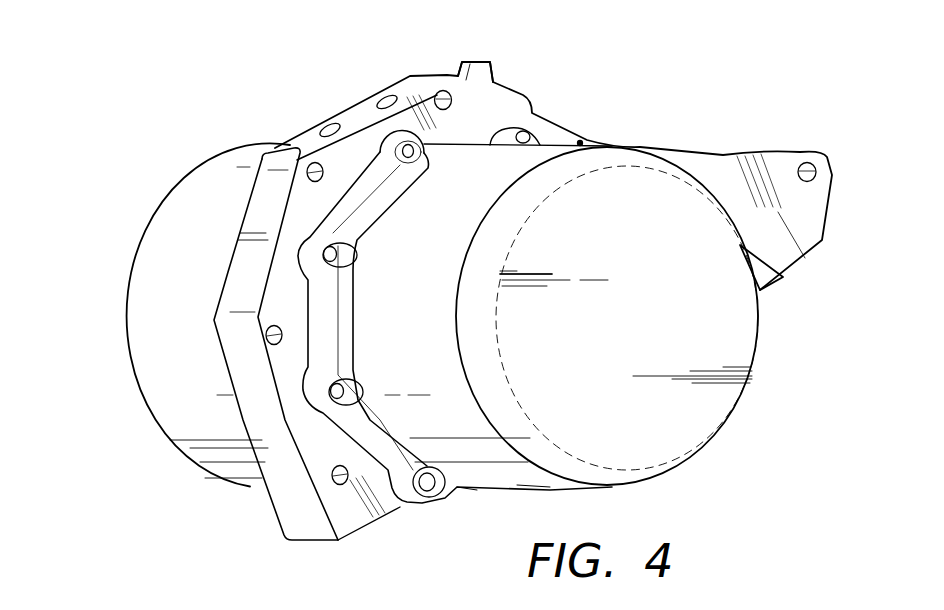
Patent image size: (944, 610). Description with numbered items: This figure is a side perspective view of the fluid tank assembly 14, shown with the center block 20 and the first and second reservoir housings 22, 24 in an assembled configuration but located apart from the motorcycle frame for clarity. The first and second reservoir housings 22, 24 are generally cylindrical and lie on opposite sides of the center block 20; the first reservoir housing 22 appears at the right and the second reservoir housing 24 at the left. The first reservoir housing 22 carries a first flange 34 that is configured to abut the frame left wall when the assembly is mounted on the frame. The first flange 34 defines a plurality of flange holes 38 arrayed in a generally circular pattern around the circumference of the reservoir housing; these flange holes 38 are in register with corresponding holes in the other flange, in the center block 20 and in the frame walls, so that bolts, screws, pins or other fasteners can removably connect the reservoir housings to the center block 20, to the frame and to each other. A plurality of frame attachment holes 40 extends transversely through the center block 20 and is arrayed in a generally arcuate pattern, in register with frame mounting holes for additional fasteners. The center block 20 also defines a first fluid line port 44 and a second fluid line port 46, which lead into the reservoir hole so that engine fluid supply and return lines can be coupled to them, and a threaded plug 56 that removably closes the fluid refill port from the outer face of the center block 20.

The fluid tank assembly 14 is at (682, 62).
The center block 20 is at (495, 107).
The first reservoir housing 22 is at (717, 328).
The second reservoir housing 24 is at (150, 262).
The first flange 34 is at (385, 455).
The flange holes 38 is at (330, 254).
The frame attachment holes 40 is at (322, 173).
The first fluid line port 44 is at (333, 123).
The second fluid line port 46 is at (383, 95).
The threaded plug 56 is at (473, 66).